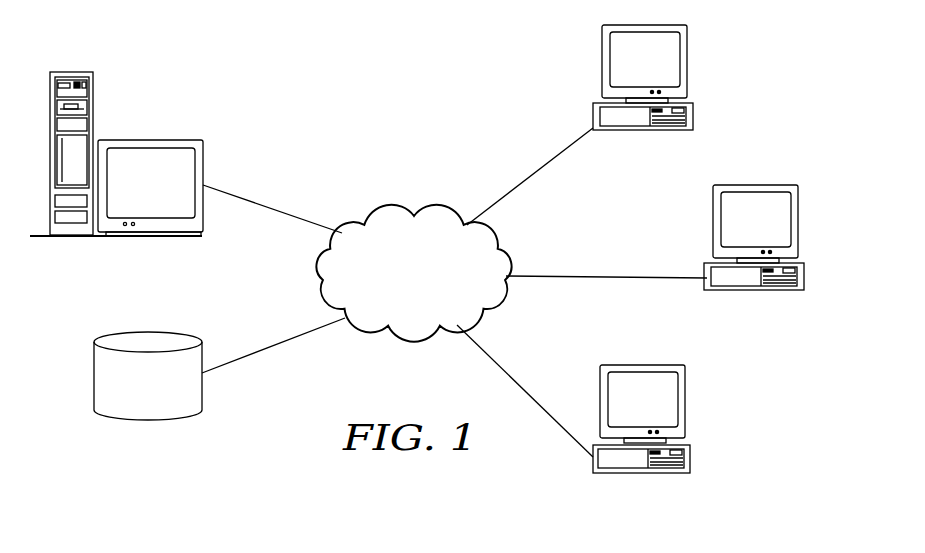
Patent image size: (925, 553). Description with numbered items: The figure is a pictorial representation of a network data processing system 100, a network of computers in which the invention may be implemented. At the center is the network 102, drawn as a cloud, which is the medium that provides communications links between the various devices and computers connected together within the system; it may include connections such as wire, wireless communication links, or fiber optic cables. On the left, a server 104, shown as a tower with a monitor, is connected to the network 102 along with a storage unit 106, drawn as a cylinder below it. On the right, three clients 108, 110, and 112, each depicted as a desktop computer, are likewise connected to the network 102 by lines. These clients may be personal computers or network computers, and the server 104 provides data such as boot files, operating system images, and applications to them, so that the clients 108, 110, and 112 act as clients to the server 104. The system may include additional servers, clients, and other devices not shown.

The network data processing system 100 is at (296, 68).
The network 102 is at (437, 300).
The server 104 is at (94, 93).
The storage unit 106 is at (94, 375).
The client 108 is at (688, 72).
The client 110 is at (800, 228).
The client 112 is at (685, 408).